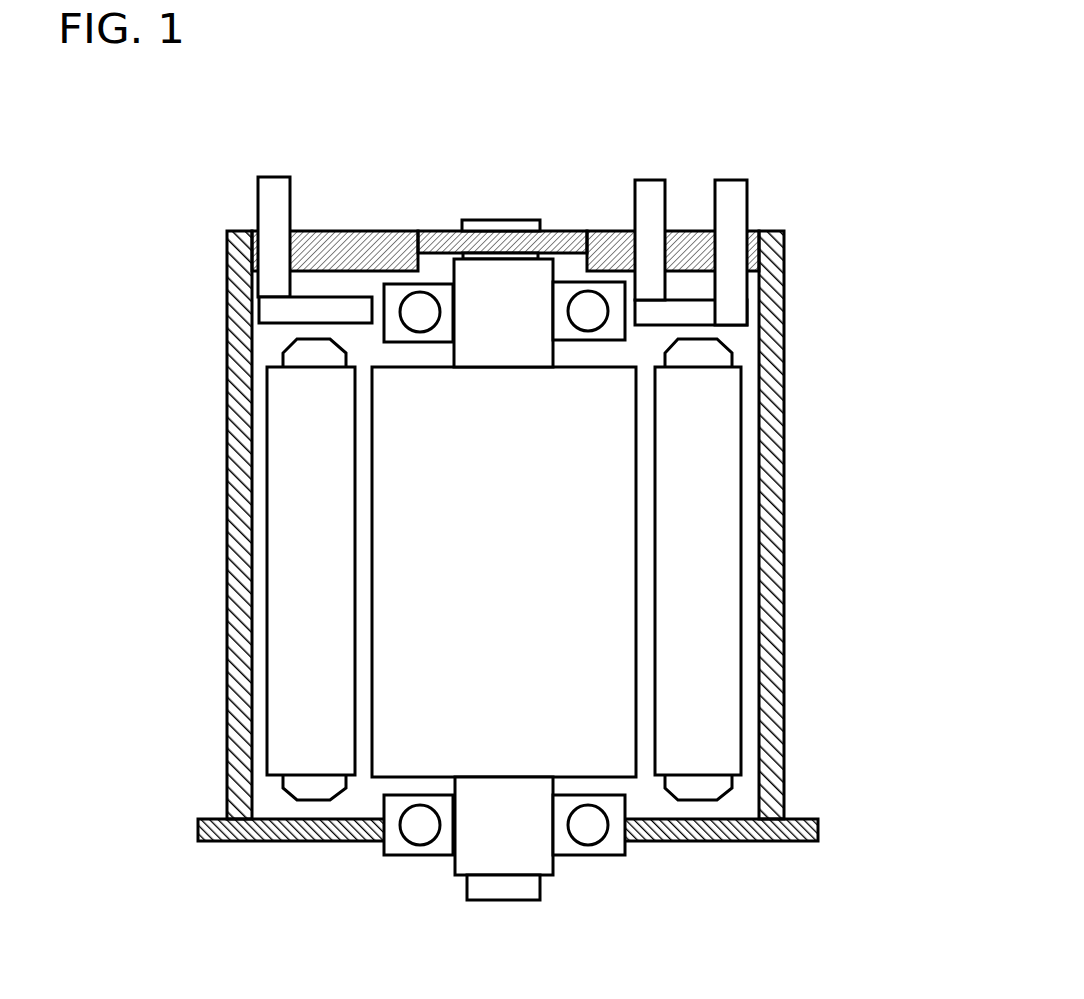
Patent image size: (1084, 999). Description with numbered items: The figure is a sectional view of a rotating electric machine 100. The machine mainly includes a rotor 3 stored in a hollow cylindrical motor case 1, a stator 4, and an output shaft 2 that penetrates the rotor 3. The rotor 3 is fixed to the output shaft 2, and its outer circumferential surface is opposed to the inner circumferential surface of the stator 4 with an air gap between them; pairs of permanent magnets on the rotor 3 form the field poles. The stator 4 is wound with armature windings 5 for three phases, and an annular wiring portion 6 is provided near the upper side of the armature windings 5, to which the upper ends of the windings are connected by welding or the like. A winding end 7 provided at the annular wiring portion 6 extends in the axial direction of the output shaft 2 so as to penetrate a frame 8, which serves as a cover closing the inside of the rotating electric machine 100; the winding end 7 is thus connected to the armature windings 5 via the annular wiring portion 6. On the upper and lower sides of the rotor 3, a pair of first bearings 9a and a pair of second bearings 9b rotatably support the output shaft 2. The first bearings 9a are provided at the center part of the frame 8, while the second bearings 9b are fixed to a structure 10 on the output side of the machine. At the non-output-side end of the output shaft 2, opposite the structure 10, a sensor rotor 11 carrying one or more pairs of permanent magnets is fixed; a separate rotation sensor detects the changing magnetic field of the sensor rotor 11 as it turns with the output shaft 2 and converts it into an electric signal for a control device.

The rotating electric machine 100 is at (777, 163).
The motor case 1 is at (781, 540).
The output shaft 2 is at (517, 847).
The rotor 3 is at (433, 630).
The stator 4 is at (732, 720).
The armature windings 5 is at (713, 350).
The annular wiring portion 6 is at (273, 311).
The winding end 7 is at (727, 263).
The frame 8 is at (303, 250).
The first bearings 9a is at (393, 325).
The second bearings 9b is at (395, 845).
The structure 10 is at (673, 828).
The sensor rotor 11 is at (493, 223).